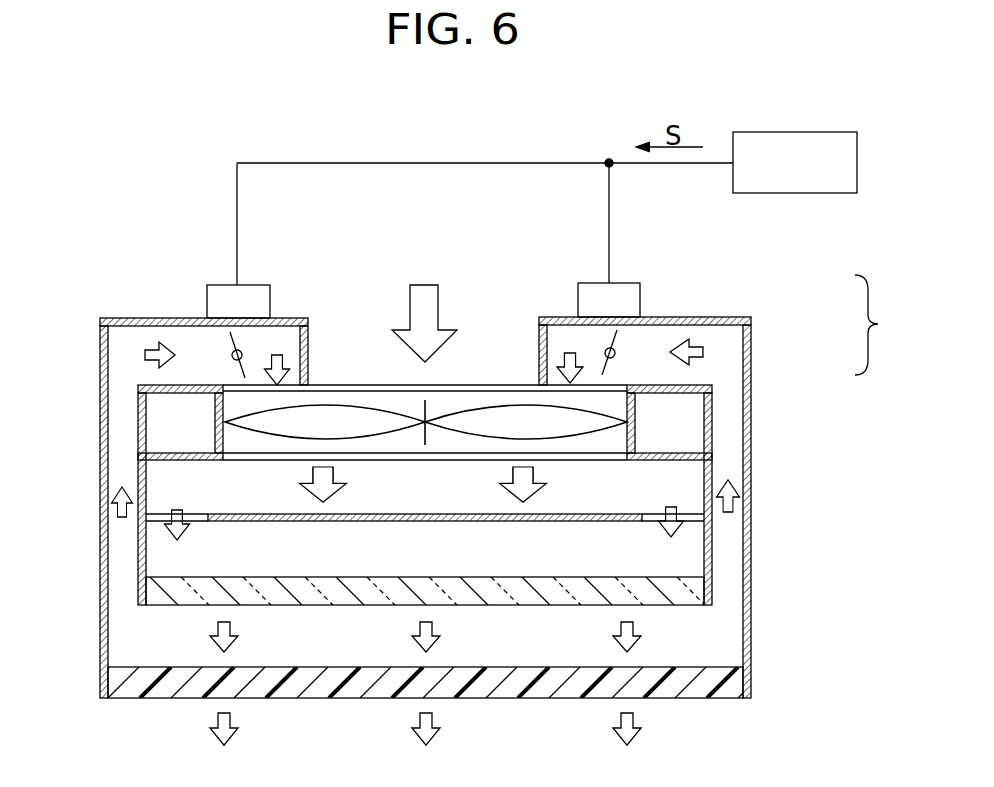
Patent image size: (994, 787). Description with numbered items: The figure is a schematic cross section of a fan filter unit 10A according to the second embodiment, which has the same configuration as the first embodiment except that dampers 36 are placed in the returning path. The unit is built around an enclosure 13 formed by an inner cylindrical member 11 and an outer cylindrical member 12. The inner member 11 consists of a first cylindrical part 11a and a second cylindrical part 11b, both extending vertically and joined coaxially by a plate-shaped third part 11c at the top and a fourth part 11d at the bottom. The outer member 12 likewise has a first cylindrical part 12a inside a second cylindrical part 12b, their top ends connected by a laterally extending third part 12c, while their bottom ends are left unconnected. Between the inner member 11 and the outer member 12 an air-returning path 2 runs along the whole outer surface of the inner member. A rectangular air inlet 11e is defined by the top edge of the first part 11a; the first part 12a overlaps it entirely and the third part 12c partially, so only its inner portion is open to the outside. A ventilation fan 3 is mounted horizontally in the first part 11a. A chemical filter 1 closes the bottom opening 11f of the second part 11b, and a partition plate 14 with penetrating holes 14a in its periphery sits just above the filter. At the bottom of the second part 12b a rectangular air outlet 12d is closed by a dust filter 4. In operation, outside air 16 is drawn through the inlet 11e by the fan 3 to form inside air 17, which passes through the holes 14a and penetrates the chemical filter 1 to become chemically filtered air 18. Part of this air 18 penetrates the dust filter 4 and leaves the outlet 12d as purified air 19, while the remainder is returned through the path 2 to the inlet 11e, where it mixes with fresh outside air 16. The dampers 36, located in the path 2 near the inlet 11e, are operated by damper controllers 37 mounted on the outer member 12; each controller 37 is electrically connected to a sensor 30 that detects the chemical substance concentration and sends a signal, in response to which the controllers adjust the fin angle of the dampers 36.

The fan filter unit 10A is at (640, 85).
The sensor 30 is at (795, 132).
The damper controller 37 is at (222, 284).
The damper 36 is at (232, 356).
The outer cylindrical member 12 is at (435, 510).
The first cylindrical part of outer member 12a is at (307, 343).
The second cylindrical part of outer member 12b is at (100, 397).
The third part of outer member 12c is at (110, 318).
The air outlet 12d is at (125, 690).
The inner cylindrical member 11 is at (442, 474).
The first cylindrical part of inner member 11a is at (706, 438).
The second cylindrical part of inner member 11b is at (138, 472).
The third part of inner member 11c is at (146, 386).
The fourth part of inner member 11d is at (183, 450).
The air inlet 11e is at (330, 388).
The bottom opening 11f is at (166, 606).
The enclosure 13 is at (888, 325).
The ventilation fan 3 is at (491, 420).
The partition plate 14 is at (493, 509).
The penetrating holes 14a is at (708, 533).
The chemical filter 1 is at (686, 600).
The air-returning path 2 is at (120, 556).
The dust filter 4 is at (724, 690).
The outside air 16 is at (430, 286).
The inside air 17 is at (348, 488).
The chemically filtered air 18 is at (108, 503).
The purified air 19 is at (238, 744).